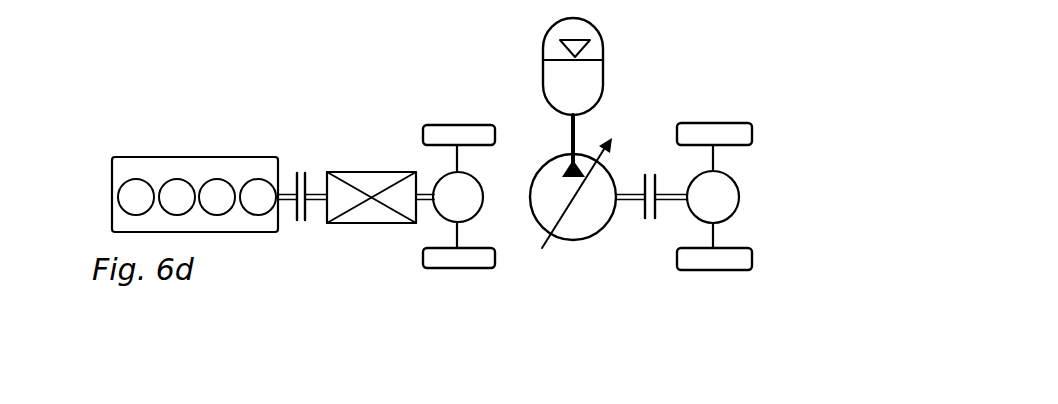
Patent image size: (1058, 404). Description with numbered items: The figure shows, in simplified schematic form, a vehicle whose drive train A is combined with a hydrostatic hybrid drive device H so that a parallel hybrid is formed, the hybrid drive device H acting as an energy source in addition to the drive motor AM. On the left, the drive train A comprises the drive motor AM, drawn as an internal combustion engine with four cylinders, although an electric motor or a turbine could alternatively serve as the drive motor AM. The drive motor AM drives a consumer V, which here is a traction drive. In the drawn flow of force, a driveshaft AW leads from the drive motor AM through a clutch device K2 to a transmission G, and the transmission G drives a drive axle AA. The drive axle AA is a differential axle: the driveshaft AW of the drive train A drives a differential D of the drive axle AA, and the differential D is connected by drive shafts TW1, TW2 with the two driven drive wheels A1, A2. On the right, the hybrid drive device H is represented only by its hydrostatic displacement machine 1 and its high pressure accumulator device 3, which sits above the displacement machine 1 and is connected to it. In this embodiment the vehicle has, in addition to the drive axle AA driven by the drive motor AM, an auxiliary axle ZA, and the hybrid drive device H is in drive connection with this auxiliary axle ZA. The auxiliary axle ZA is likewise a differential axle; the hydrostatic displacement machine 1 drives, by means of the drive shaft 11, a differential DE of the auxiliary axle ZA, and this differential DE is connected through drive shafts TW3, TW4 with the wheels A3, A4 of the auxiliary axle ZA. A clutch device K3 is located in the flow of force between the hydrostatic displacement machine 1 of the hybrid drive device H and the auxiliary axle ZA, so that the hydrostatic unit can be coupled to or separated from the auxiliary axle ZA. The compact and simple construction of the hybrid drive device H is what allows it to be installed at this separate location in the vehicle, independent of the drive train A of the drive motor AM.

The drive train A is at (108, 140).
The drive motor AM is at (142, 170).
The driveshaft AW is at (289, 202).
The clutch device K2 is at (299, 143).
The transmission G is at (363, 182).
The consumer V is at (444, 92).
The drive axle AA is at (477, 210).
The differential D is at (448, 203).
The drive shaft TW1 is at (457, 157).
The drive wheel A1 is at (465, 130).
The drive shaft TW2 is at (450, 237).
The drive wheel A2 is at (472, 258).
The hydrostatic hybrid drive device H is at (628, 33).
The high pressure accumulator device 3 is at (605, 72).
The hydrostatic displacement machine 1 is at (554, 167).
The drive shaft 11 is at (627, 203).
The clutch device K3 is at (648, 238).
The auxiliary axle ZA is at (738, 188).
The differential DE is at (727, 198).
The drive shaft TW3 is at (717, 158).
The wheel A3 is at (723, 135).
The drive shaft TW4 is at (717, 233).
The wheel A4 is at (735, 258).